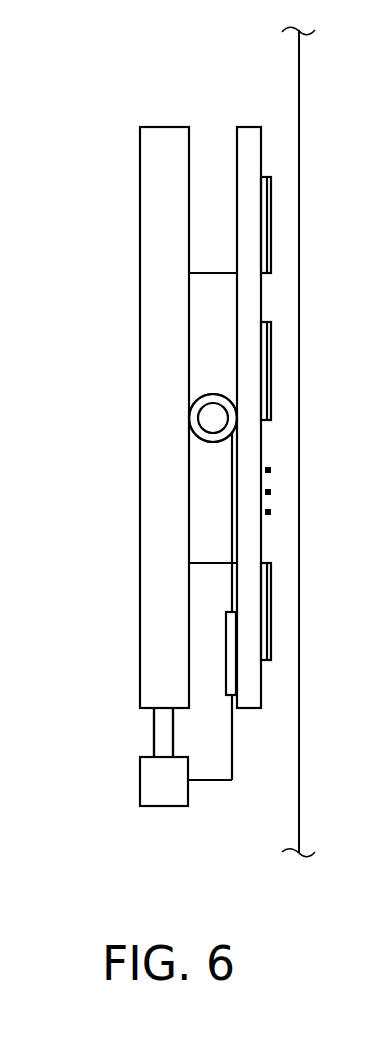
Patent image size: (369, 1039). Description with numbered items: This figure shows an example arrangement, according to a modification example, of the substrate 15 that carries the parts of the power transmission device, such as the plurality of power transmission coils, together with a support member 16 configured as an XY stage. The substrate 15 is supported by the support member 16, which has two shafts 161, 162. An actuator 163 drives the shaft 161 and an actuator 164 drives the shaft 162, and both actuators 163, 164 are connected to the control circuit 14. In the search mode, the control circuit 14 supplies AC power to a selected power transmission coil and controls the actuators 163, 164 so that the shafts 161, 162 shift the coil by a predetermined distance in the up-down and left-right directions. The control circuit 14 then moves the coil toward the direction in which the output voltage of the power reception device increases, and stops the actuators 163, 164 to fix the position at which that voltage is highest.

The control circuit 14 is at (236, 688).
The substrate 15 is at (248, 127).
The support member 16 is at (237, 110).
The shaft 161 is at (162, 738).
The shaft 162 is at (207, 420).
The actuator 163 is at (140, 787).
The actuator 164 is at (212, 445).